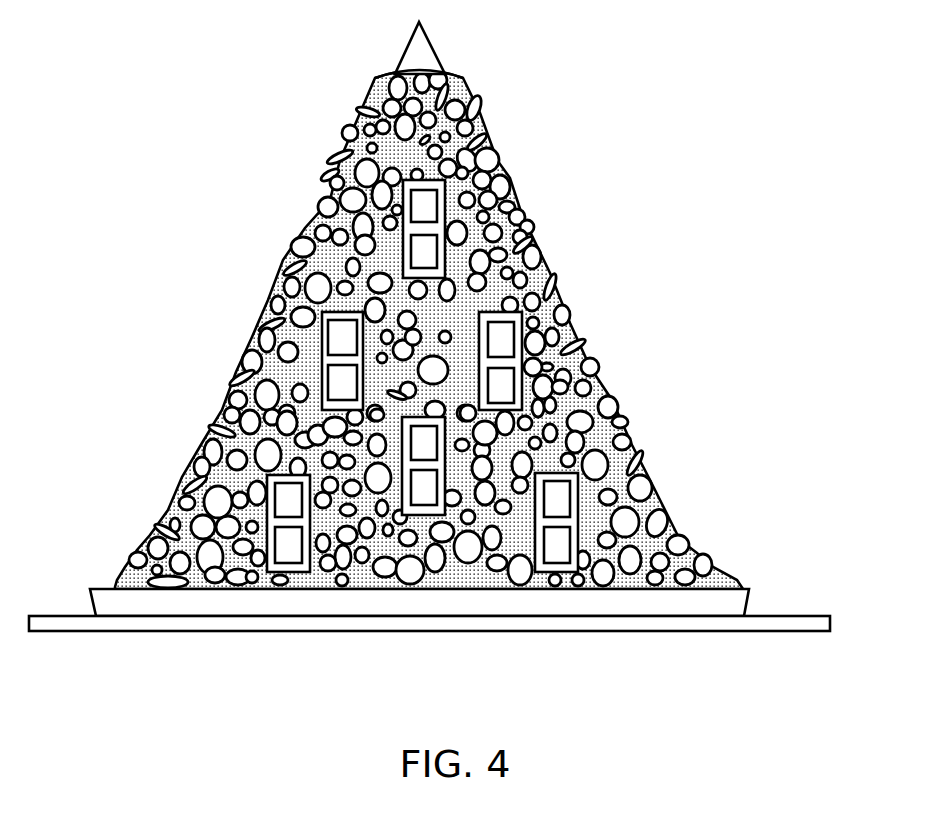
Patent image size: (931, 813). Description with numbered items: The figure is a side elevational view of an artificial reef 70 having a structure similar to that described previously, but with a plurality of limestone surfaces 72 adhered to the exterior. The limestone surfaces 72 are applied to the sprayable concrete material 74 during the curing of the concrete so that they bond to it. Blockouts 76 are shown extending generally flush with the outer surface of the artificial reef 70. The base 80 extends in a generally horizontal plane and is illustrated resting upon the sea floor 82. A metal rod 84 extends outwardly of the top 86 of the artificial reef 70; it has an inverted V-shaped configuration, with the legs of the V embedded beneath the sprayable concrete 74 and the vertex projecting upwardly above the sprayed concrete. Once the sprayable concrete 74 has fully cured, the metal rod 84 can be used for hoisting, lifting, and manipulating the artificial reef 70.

The artificial reef 70 is at (429, 302).
The limestone surfaces 72 is at (247, 360).
The sprayable concrete material 74 is at (510, 178).
The blockouts 76 is at (585, 330).
The base 80 is at (748, 604).
The sea floor 82 is at (800, 616).
The metal rod 84 is at (432, 44).
The top 86 is at (460, 74).